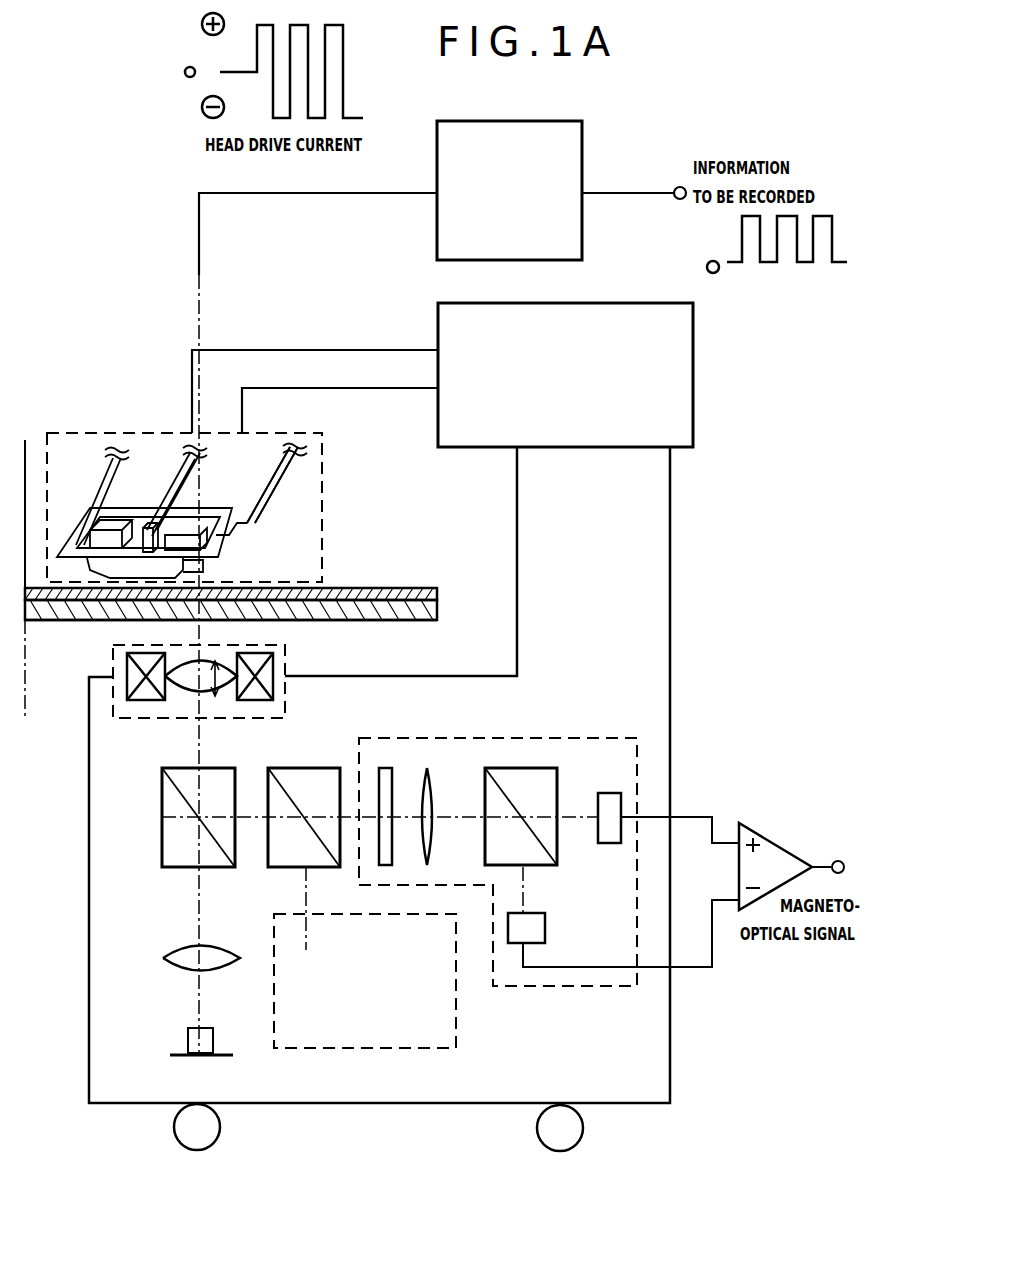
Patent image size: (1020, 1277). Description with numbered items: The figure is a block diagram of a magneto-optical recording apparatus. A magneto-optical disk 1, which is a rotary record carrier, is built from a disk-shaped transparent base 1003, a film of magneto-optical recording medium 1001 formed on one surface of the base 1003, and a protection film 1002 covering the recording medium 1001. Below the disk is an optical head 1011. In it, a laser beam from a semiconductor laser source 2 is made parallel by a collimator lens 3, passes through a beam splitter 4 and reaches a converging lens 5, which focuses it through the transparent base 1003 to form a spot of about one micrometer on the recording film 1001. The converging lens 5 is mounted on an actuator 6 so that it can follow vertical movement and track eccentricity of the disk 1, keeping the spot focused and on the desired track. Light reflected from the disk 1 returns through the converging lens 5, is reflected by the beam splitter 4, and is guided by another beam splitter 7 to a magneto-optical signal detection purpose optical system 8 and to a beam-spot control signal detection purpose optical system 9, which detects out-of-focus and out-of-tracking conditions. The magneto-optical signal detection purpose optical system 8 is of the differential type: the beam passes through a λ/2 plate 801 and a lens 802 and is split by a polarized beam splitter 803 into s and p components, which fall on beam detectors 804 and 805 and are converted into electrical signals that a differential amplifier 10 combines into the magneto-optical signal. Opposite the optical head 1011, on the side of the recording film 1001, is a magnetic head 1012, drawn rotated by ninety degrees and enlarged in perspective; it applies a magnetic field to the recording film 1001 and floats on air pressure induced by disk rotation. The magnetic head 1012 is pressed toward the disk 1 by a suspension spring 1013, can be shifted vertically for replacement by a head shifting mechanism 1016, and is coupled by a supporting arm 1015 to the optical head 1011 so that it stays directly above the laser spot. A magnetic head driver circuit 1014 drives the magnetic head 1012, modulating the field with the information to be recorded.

The magneto-optical disk 1 is at (268, 580).
The semiconductor laser source 2 is at (186, 1050).
The collimator lens 3 is at (163, 958).
The beam splitter 4 is at (162, 808).
The converging lens 5 is at (222, 662).
The actuator 6 is at (113, 660).
The beam splitter 7 is at (312, 768).
The magneto-optical signal detection purpose optical system 8 is at (511, 897).
The beam-spot control signal detection purpose optical system 9 is at (456, 1048).
The differential amplifier 10 is at (764, 836).
The λ/2 plate 801 is at (385, 740).
The lens 802 is at (450, 740).
The polarized beam splitter 803 is at (552, 740).
The beam detector 804 is at (610, 843).
The beam detector 805 is at (545, 928).
The magneto-optical recording medium 1001 is at (440, 600).
The protection film 1002 is at (430, 588).
The disk-shaped transparent base 1003 is at (249, 641).
The optical head 1011 is at (670, 1060).
The magnetic head 1012 is at (108, 530).
The suspension spring 1013 is at (273, 507).
The magnetic head driver circuit 1014 is at (582, 147).
The supporting arm 1015 is at (370, 350).
The head shifting mechanism 1016 is at (693, 372).